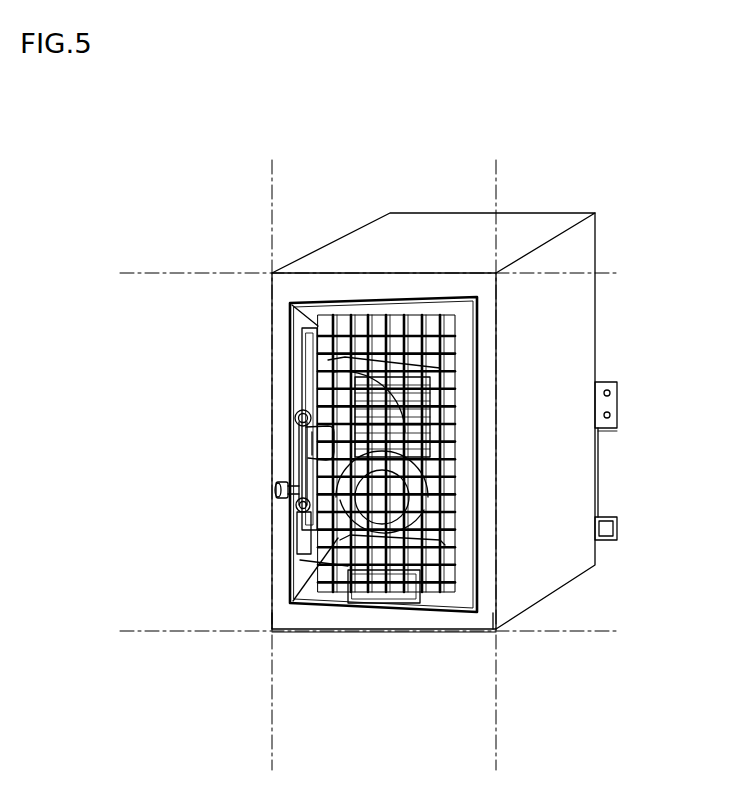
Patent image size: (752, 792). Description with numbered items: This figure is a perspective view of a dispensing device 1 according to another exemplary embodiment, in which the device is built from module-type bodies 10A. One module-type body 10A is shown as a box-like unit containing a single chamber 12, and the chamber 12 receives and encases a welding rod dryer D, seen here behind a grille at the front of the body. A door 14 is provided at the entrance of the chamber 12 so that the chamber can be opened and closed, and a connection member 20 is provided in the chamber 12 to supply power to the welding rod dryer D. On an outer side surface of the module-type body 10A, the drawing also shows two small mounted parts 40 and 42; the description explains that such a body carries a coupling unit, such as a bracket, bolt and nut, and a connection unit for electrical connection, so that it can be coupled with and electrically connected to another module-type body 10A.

The dispensing device 1 is at (411, 465).
The module-type body 10A is at (573, 343).
The chamber 12 is at (379, 619).
The door 14 is at (444, 300).
The connection member 20 is at (318, 379).
The mounting bracket 40 is at (612, 398).
The lower mounting bracket 42 is at (610, 528).
The welding rod dryer D is at (393, 498).